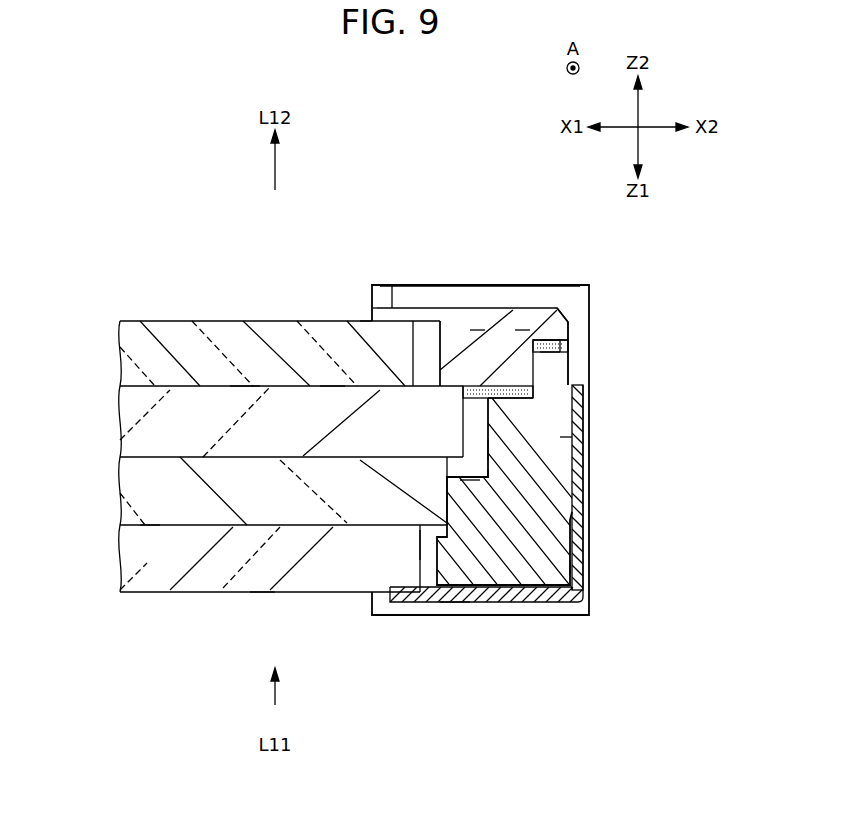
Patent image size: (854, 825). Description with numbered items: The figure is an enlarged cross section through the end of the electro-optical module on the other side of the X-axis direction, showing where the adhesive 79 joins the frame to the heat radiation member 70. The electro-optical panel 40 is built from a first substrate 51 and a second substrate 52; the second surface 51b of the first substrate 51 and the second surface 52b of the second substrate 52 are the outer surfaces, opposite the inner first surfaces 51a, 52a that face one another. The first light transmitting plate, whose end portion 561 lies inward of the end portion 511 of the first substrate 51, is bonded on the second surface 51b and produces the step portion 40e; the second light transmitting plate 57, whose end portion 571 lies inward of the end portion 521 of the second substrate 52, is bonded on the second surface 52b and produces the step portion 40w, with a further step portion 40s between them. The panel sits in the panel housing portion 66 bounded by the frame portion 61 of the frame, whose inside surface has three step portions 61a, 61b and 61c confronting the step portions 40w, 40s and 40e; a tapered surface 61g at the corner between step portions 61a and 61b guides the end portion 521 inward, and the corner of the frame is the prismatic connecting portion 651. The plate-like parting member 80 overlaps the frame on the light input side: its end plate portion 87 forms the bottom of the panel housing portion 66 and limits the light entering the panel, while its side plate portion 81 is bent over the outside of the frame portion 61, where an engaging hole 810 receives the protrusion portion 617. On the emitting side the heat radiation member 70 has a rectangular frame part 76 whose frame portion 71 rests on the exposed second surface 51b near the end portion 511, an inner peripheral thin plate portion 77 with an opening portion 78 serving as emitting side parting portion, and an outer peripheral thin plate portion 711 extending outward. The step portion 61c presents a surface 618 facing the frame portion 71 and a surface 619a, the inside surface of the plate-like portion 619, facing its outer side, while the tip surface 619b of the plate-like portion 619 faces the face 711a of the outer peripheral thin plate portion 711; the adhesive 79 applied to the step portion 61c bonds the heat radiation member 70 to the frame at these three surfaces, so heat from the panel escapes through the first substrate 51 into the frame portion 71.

The electro-optical panel 40 is at (212, 257).
The first substrate 51 is at (158, 423).
The second substrate 52 is at (206, 440).
The first layer portion 51a is at (207, 450).
The second surface 51b is at (246, 380).
The second layer portion 52a is at (232, 528).
The second surface 52b is at (150, 527).
The second light transmitting plate 57 is at (262, 578).
The step portion 40s is at (332, 384).
The step portion 40e is at (367, 352).
The step portion 40w is at (415, 535).
The end portion 561 is at (427, 327).
The opening portion 78 is at (372, 318).
The inner peripheral thin plate portion 77 is at (392, 305).
The rectangular frame part 76 is at (442, 340).
The frame portion 71 is at (457, 327).
The connecting portion 651 is at (487, 298).
The outer peripheral thin plate portion 711 is at (590, 293).
The heat radiation member 70 is at (507, 300).
The adhesive 79 is at (477, 327).
The surface 618 is at (523, 327).
The plate-like portion 619 is at (535, 360).
The surface 619b is at (560, 337).
The side wall end face 711a is at (570, 347).
The surface 619a is at (563, 363).
The step portion 61c is at (530, 392).
The frame portion 61 is at (582, 522).
The protrusion portion 617 is at (575, 503).
The end portion 511 is at (500, 414).
The side plate portion 81 is at (565, 437).
The panel housing portion 66 is at (477, 452).
The step portion 61b is at (480, 468).
The tapered surface 61g is at (470, 485).
The step portion 61a is at (520, 577).
The end portion 571 is at (470, 583).
The end portion 521 is at (550, 567).
The parting member 80 is at (410, 615).
The end plate portion 87 is at (457, 590).
The engaging hole 810 is at (590, 525).